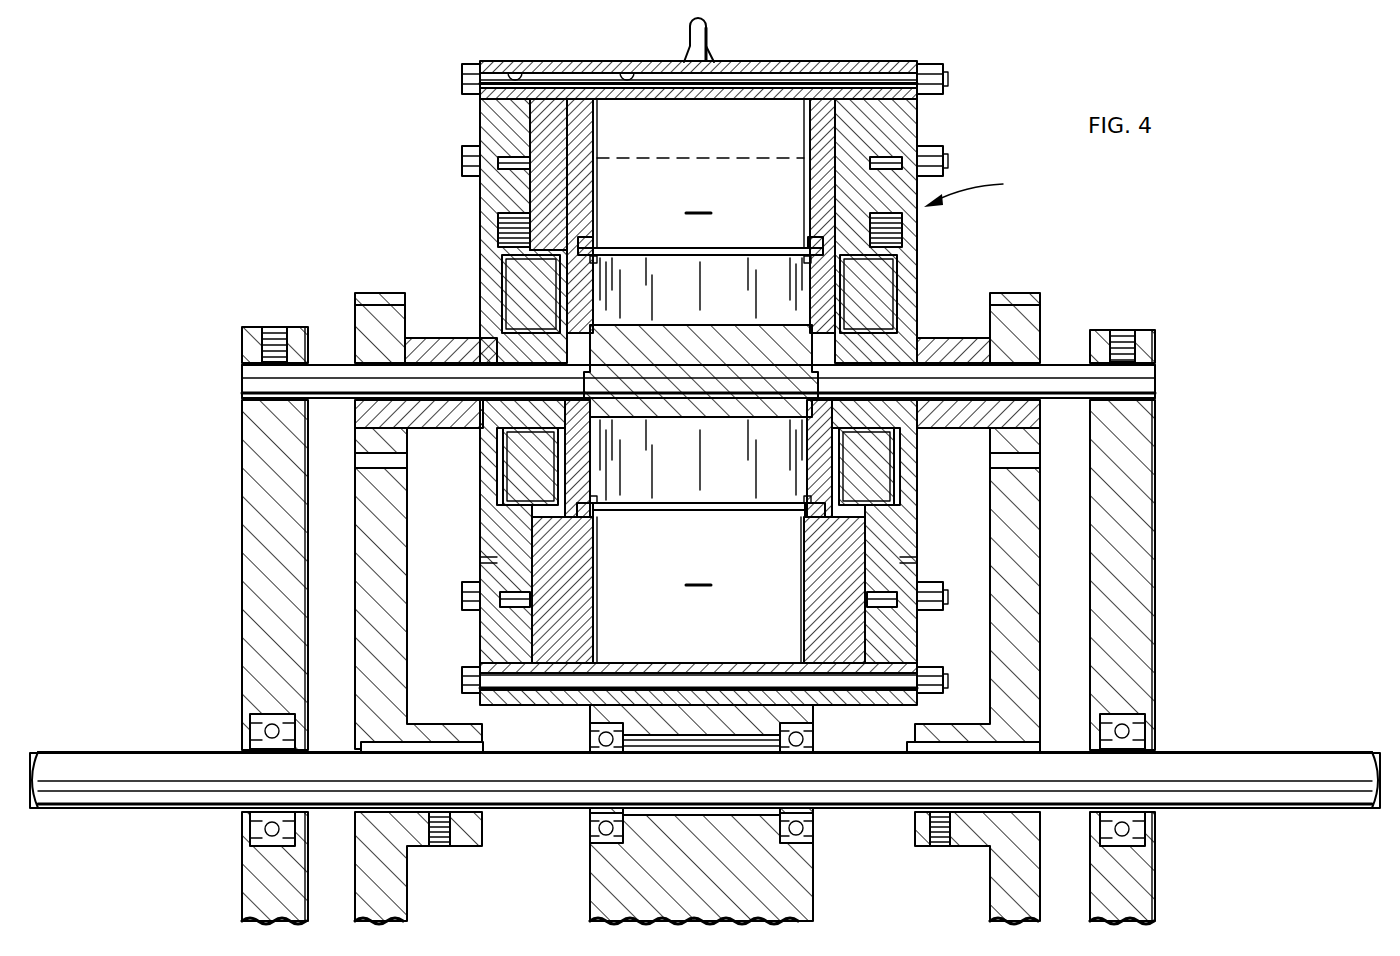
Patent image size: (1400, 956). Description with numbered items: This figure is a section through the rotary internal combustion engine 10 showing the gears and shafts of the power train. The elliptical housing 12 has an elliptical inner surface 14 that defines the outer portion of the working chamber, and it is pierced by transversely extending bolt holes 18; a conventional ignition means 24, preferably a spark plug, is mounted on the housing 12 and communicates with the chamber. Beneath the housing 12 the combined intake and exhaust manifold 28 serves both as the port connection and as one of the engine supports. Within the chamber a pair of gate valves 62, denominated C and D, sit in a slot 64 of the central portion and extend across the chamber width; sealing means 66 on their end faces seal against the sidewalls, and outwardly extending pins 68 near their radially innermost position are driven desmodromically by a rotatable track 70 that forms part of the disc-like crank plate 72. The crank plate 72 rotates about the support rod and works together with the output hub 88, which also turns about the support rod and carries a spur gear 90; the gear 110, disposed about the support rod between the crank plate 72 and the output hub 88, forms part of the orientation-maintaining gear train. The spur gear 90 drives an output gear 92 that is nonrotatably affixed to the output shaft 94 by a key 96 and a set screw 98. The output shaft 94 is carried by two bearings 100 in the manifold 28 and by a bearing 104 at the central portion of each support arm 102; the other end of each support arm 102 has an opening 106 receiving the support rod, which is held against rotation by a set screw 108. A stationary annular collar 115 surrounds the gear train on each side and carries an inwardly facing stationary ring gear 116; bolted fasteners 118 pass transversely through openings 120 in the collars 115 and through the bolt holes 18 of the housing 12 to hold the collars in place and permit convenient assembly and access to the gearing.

The internal combustion engine 10 is at (978, 188).
The elliptical housing 12 is at (777, 62).
The elliptical inner surface 14 is at (740, 663).
The bolt holes 18 is at (625, 72).
The ignition means 24 is at (712, 34).
The combined intake and exhaust manifold 28 is at (588, 890).
The gate valves 62 is at (665, 117).
The slot 64 is at (697, 437).
The sealing means 66 is at (593, 190).
The pins 68 is at (595, 263).
The rotatable track 70 is at (600, 238).
The crank plate 72 is at (588, 458).
The output hub 88 is at (490, 226).
The spur gear 90 is at (385, 297).
The output gear 92 is at (1027, 537).
The output shaft 94 is at (130, 756).
The key 96 is at (455, 748).
The set screw 98 is at (437, 848).
The bearings 100 is at (593, 833).
The support arms 102 is at (258, 545).
The bearing 104 is at (252, 834).
The opening 106 is at (265, 395).
The set screw 108 is at (278, 327).
The gear 110 is at (515, 285).
The annular collar 115 is at (495, 118).
The ring gear 116 is at (510, 602).
The bolted fasteners 118 is at (462, 72).
The openings 120 is at (515, 60).